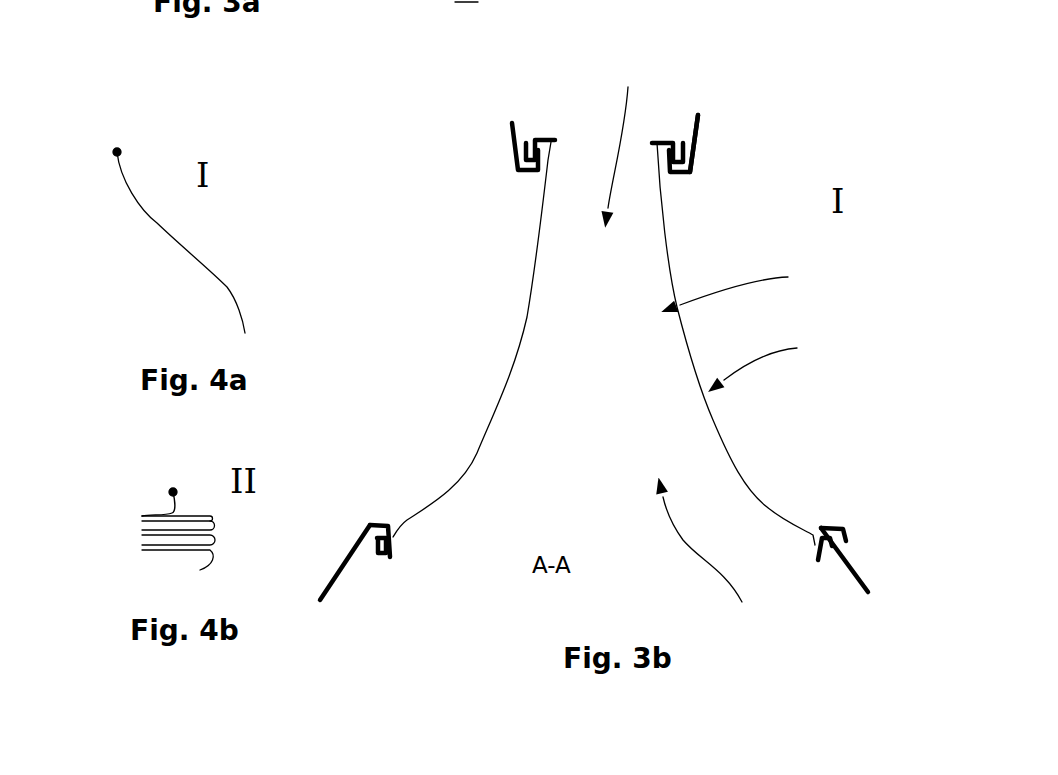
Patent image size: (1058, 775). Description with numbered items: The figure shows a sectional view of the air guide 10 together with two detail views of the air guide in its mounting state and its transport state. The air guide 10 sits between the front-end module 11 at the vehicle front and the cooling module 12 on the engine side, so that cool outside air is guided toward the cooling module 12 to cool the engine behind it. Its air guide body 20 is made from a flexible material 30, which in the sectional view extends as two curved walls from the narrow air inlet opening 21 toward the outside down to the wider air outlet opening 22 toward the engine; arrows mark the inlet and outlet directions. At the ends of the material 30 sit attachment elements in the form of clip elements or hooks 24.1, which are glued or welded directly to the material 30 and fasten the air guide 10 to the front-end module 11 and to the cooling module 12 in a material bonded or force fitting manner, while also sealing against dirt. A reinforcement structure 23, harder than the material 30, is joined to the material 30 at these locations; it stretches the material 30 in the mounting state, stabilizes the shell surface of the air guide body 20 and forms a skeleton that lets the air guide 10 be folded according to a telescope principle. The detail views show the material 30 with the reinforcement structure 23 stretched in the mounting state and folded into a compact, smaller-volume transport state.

In FIG. 3b, the air guide 10 is at (786, 354).
In FIG. 3b, the front-end module 11 is at (698, 140).
In FIG. 3b, the cooling module 12 is at (825, 580).
In FIG. 3b, the air guide body 20 is at (755, 281).
In FIG. 3b, the air inlet opening 21 is at (628, 130).
In FIG. 3b, the air outlet opening 22 is at (713, 568).
In FIG. 3b, the reinforcement structure 23 is at (547, 137).
In FIG. 4a, the reinforcement structure 23 is at (113, 149).
In FIG. 4b, the reinforcement structure 23 is at (170, 489).
In FIG. 3b, the clip elements, hooks 24.1 is at (537, 140).
In FIG. 3b, the material 30 is at (665, 233).
In FIG. 4a, the material 30 is at (158, 223).
In FIG. 4b, the material 30 is at (142, 550).